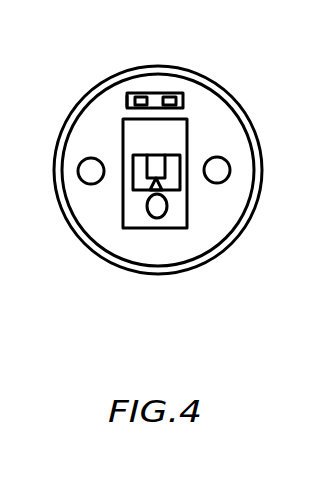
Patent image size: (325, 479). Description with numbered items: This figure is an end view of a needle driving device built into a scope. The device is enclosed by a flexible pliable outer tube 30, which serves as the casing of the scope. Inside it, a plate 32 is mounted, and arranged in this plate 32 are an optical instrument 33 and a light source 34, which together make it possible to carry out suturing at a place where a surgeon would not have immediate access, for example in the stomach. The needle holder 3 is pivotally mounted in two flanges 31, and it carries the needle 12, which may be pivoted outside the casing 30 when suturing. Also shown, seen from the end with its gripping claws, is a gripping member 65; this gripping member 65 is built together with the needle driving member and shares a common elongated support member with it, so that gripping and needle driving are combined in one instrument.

The flexible pliable outer tube 30 is at (212, 81).
The plate 32 is at (145, 92).
The gripping member 65 is at (128, 100).
The needle holder 3 is at (178, 205).
The flanges 31 is at (123, 160).
The needle 12 is at (152, 195).
The optical instrument 33 is at (88, 174).
The light source 34 is at (217, 170).